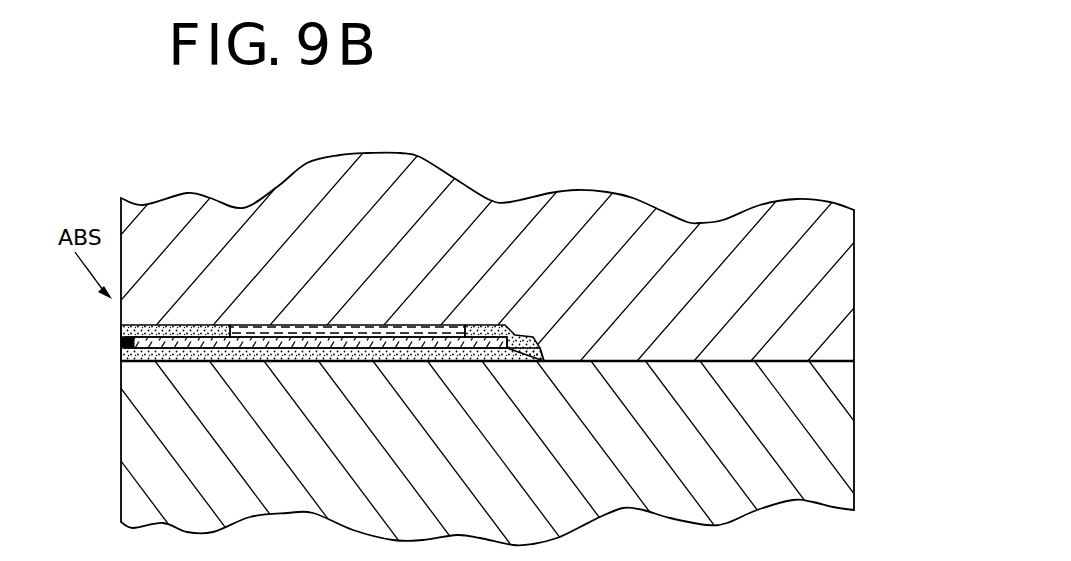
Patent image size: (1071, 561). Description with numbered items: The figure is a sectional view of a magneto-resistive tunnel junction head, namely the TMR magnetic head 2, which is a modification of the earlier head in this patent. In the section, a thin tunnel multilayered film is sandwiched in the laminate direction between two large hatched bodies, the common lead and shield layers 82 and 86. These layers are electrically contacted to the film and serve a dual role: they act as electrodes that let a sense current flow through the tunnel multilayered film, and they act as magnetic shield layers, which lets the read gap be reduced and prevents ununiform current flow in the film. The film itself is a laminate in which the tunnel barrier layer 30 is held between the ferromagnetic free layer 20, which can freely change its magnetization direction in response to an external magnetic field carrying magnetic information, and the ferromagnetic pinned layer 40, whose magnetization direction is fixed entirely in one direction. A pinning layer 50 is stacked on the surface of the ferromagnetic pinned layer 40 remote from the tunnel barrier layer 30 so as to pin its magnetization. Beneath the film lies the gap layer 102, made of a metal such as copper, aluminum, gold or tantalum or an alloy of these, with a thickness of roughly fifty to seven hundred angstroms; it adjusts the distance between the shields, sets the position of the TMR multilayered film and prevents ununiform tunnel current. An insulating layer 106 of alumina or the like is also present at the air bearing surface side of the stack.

The TMR magnetic head 2 is at (703, 136).
The common lead and shield layer 86 is at (833, 277).
The common lead and shield layer 82 is at (822, 434).
The gap layer 102 is at (122, 353).
The ferromagnetic pinned layer 40 is at (472, 334).
The ferromagnetic free layer 20 is at (122, 342).
The insulating layer 106 is at (123, 327).
The pinning layer 50 is at (413, 327).
The tunnel barrier layer 30 is at (500, 330).